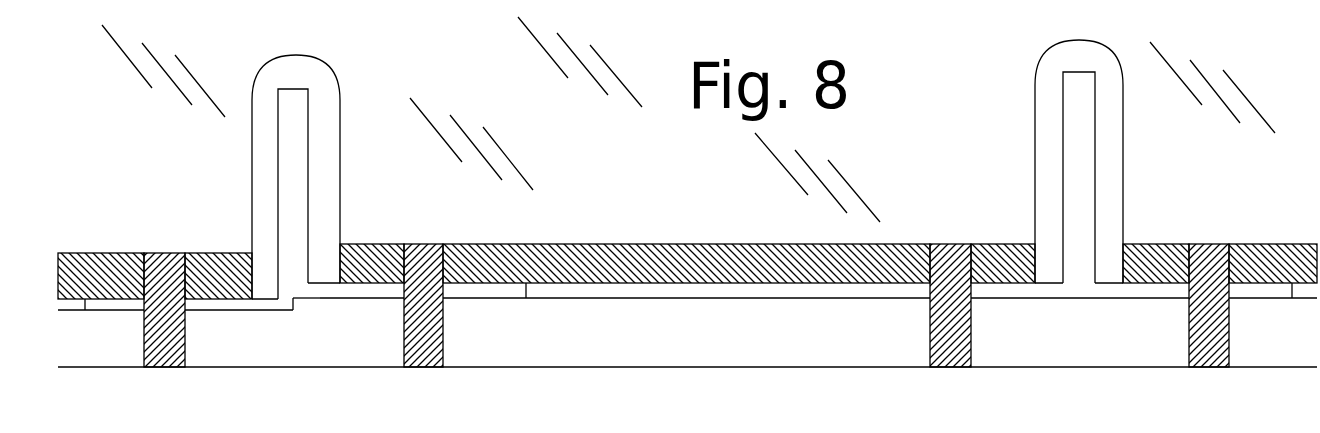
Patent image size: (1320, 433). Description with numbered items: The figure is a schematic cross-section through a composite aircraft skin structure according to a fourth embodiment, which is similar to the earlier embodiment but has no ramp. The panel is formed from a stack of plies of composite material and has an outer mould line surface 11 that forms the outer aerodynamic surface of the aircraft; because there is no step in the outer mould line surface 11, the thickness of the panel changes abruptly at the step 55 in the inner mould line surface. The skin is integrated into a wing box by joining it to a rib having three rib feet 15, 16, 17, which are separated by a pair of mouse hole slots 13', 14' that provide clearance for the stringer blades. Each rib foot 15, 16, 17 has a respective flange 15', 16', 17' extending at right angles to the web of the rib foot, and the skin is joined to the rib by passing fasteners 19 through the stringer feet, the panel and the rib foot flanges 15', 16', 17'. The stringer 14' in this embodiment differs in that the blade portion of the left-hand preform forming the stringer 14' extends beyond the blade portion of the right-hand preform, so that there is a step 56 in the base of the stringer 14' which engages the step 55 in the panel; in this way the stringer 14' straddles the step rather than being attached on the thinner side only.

The outer mould line surface 11 is at (560, 368).
The mouse hole slot 13' is at (1037, 153).
The stringer 14' is at (252, 170).
The rib foot 15 is at (175, 264).
The flange 15' is at (101, 230).
The rib foot 16 is at (645, 291).
The flange 16' is at (625, 351).
The rib foot 17 is at (1144, 259).
The flange 17' is at (1273, 217).
The fastener 19 is at (405, 335).
The step 55 is at (290, 308).
The step 56 is at (295, 301).